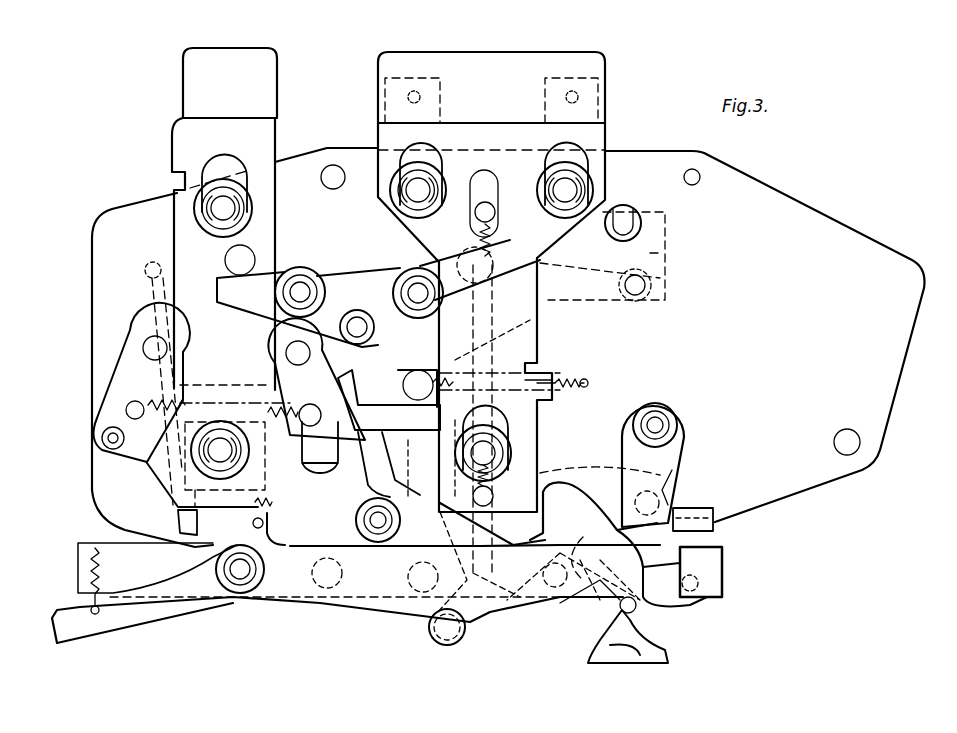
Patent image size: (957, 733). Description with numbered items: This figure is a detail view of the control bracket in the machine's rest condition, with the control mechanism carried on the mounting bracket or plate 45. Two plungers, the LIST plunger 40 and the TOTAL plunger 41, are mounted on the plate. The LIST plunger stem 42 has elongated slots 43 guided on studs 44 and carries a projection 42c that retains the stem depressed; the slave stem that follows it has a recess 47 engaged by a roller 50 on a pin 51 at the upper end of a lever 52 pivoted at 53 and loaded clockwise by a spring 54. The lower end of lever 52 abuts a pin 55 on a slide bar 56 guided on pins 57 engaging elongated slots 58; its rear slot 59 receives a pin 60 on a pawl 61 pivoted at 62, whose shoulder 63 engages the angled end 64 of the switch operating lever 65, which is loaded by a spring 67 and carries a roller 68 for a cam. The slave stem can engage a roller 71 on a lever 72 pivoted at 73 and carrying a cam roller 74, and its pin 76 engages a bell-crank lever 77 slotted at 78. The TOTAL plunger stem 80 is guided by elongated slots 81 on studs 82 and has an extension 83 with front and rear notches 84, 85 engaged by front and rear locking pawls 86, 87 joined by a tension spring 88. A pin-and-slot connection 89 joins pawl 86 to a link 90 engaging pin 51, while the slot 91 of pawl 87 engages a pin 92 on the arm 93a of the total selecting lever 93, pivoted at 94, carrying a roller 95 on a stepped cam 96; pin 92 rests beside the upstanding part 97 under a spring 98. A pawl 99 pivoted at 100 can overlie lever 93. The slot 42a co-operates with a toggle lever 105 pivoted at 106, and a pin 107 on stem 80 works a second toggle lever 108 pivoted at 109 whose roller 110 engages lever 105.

The LIST plunger 40 is at (488, 52).
The TOTAL plunger 41 is at (183, 67).
The LIST plunger stem 42 is at (491, 192).
The slot in LIST plunger stem 42a is at (462, 258).
The projection on LIST plunger stem 42c is at (540, 405).
The elongated slots 43 is at (590, 155).
The studs 44 is at (582, 190).
The mounting bracket or plate 45 is at (830, 228).
The recess 47 is at (545, 322).
The roller 50 is at (432, 360).
The pin 51 is at (418, 370).
The lever 52 is at (431, 460).
The pivot 53 is at (389, 464).
The spring 54 is at (572, 380).
The pin on slide bar 55 is at (408, 577).
The slide bar 56 is at (157, 568).
The pins 57 is at (240, 594).
The elongated slots in slide bar 58 is at (262, 592).
The slot 59 is at (724, 568).
The pin on pawl 60 is at (680, 608).
The pawl 61 is at (700, 605).
The pivot of pawl 62 is at (656, 410).
The shoulder 63 is at (692, 512).
The angled end 64 is at (713, 508).
The switch operating lever 65 is at (168, 620).
The spring 67 is at (90, 545).
The roller 68 is at (595, 652).
The roller 71 is at (505, 490).
The lever 72 is at (612, 470).
The pivot 73 is at (676, 478).
The roller 74 is at (465, 632).
The pin 76 is at (530, 270).
The bell-crank lever 77 is at (668, 253).
The slot 78 is at (632, 208).
The TOTAL plunger stem 80 is at (178, 128).
The elongated slots 81 is at (205, 165).
The studs 82 is at (236, 210).
The extension 83 is at (251, 492).
The front notch 84 is at (160, 485).
The rear notch 85 is at (306, 447).
The front locking pawl 86 is at (118, 378).
The rear locking pawl 87 is at (275, 352).
The tension spring 88 is at (268, 395).
The pin-and-slot connection 89 is at (104, 446).
The link 90 is at (205, 395).
The slot 91 is at (318, 402).
The pin 92 is at (250, 450).
The total selecting lever 93 is at (572, 500).
The arm 93a is at (385, 380).
The pivot 94 is at (376, 530).
The roller 95 is at (600, 590).
The stepped cam 96 is at (660, 650).
The upstanding part 97 is at (355, 518).
The spring 98 is at (263, 523).
The pawl 99 is at (178, 520).
The pivot 100 is at (145, 272).
The toggle lever 105 is at (368, 282).
The pivot 106 is at (418, 282).
The pin 107 is at (226, 256).
The second toggle lever 108 is at (340, 262).
The pivot 109 is at (303, 270).
The roller 110 is at (366, 326).